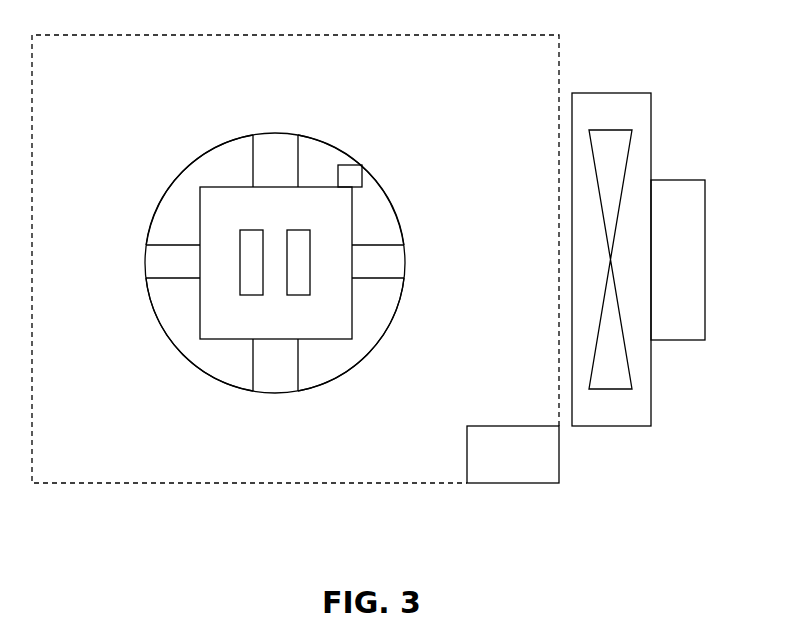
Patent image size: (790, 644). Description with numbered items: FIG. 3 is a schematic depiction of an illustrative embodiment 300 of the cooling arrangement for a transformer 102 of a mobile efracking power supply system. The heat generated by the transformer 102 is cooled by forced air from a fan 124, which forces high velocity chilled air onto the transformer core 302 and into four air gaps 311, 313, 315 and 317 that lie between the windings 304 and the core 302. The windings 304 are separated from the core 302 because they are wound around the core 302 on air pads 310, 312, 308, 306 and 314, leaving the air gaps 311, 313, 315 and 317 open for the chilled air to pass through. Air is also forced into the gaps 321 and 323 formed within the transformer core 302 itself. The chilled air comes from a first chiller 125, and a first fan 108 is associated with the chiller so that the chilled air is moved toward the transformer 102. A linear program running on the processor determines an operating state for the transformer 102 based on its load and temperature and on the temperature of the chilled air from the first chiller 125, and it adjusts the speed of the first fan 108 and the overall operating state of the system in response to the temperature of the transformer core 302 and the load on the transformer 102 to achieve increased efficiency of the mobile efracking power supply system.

The first transformer 102 is at (559, 58).
The first fan 108 is at (628, 153).
The fan 124 is at (517, 483).
The first chiller 125 is at (678, 340).
The sensor assembly 300 is at (148, 87).
The core 302 is at (210, 193).
The windings 304 is at (402, 218).
The air pad 306 is at (398, 262).
The air pad 308 is at (273, 385).
The air pad 310 is at (275, 142).
The air gap 311 is at (318, 160).
The air pad 312 is at (148, 262).
The air gap 313 is at (372, 318).
The air pad 314 is at (362, 175).
The air gap 315 is at (178, 315).
The air gap 317 is at (175, 210).
The gap 321 is at (240, 278).
The gap 323 is at (311, 278).